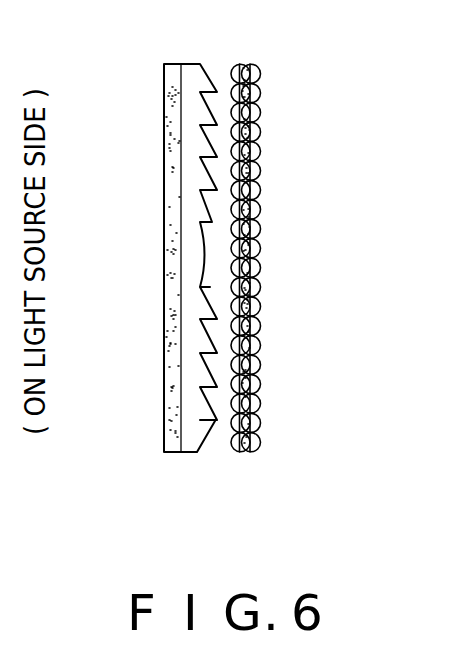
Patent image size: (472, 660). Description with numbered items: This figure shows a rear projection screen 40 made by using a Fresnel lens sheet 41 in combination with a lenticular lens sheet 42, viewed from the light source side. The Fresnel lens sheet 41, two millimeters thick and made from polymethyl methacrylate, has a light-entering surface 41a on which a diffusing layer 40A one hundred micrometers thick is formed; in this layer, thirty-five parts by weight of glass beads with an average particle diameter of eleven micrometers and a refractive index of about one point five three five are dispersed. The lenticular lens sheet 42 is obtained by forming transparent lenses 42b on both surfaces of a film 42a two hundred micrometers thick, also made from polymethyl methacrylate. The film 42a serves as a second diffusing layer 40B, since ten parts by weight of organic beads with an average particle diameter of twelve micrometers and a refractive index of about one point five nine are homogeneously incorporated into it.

The rear projection screen 40 is at (265, 495).
The diffusing layer 40A is at (172, 67).
The diffusing layer 40B is at (246, 64).
The Fresnel lens sheet 41 is at (191, 452).
The light-entering surface 41a is at (162, 268).
The lenticular lens sheet 42 is at (248, 452).
The film 42a is at (257, 150).
The transparent lenses 42b is at (256, 212).